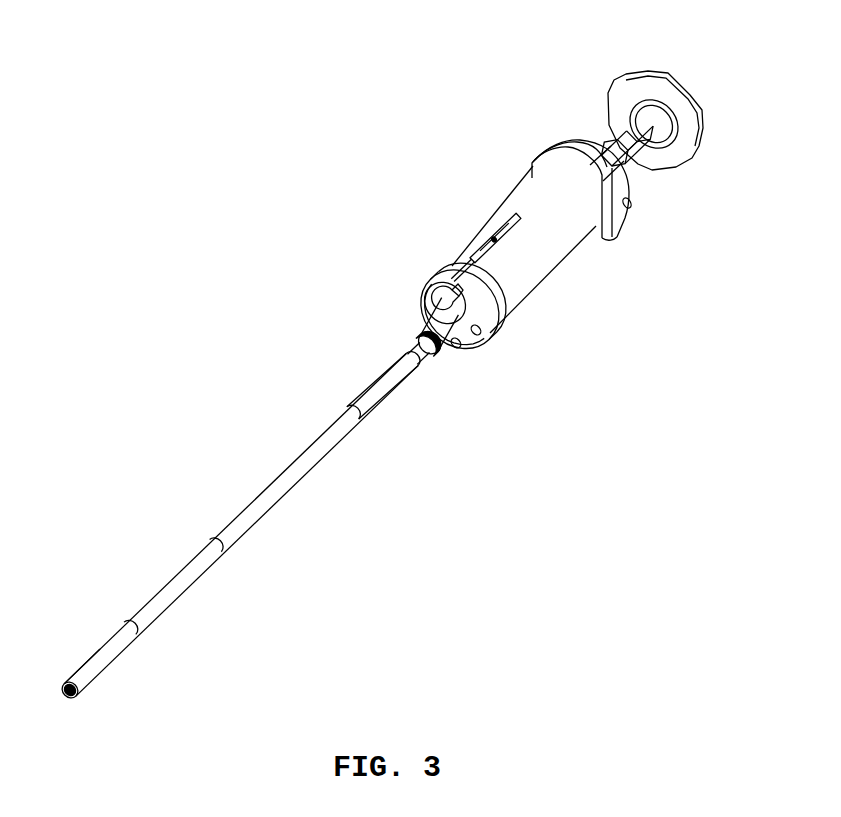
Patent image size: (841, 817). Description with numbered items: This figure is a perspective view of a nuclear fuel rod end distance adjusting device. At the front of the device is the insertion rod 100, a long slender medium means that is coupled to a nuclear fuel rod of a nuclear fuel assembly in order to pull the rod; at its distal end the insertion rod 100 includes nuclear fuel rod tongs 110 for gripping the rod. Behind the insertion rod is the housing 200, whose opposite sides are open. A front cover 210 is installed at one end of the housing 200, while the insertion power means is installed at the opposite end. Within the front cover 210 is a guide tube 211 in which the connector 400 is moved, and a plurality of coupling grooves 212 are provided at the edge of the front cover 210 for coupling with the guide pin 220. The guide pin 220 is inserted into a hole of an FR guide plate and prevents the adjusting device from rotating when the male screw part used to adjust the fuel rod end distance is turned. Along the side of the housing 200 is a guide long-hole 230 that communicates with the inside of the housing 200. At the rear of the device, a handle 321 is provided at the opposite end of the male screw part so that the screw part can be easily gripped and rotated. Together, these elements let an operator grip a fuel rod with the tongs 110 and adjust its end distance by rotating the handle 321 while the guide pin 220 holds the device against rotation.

The insertion rod 100 is at (261, 498).
The nuclear fuel rod tongs 110 is at (98, 657).
The housing 200 is at (531, 196).
The front cover 210 is at (488, 296).
The guide tube 211 is at (440, 338).
The coupling grooves 212 is at (463, 338).
The guide pin 220 is at (428, 299).
The guide long-hole 230 is at (493, 247).
The handle 321 is at (688, 83).
The connector 400 is at (363, 395).